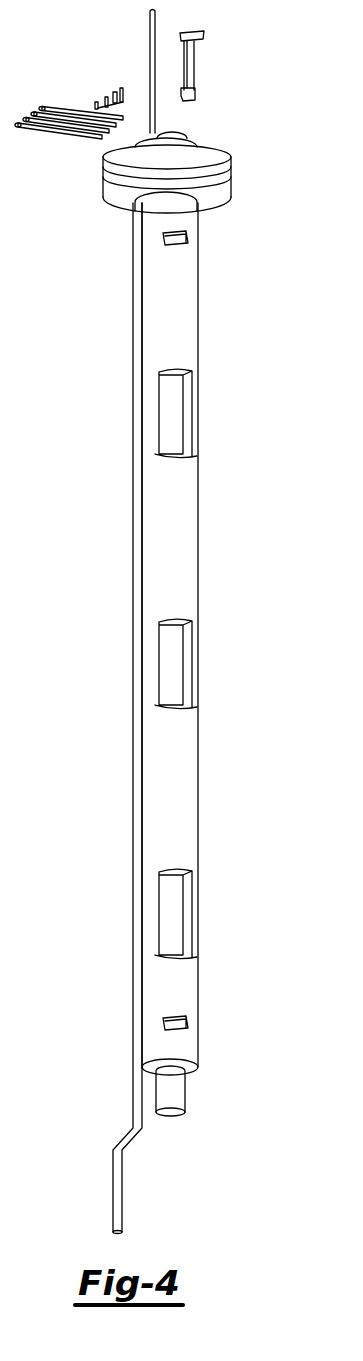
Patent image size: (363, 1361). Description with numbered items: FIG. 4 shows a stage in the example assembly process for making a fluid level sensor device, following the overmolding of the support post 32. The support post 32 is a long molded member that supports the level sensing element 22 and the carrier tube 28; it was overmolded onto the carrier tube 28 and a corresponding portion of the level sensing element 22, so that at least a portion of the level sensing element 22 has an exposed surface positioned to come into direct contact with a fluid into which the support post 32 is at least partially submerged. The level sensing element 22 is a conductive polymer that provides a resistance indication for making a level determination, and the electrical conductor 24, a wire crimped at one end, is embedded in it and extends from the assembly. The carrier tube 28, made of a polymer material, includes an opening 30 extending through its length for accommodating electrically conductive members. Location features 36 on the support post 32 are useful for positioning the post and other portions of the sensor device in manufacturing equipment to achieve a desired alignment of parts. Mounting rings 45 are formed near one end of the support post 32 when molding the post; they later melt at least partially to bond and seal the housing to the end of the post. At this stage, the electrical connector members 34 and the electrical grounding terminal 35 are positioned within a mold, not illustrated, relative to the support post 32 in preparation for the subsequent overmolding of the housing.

The level sensing element 22 is at (133, 268).
The electrical conductor 24 is at (157, 18).
The carrier tube 28 is at (178, 1098).
The opening 30 is at (172, 1115).
The support post 32 is at (190, 575).
The electrical connector members 34 is at (73, 107).
The electrical grounding terminal 35 is at (200, 82).
The location features 36 is at (188, 239).
The mounting rings 45 is at (231, 173).